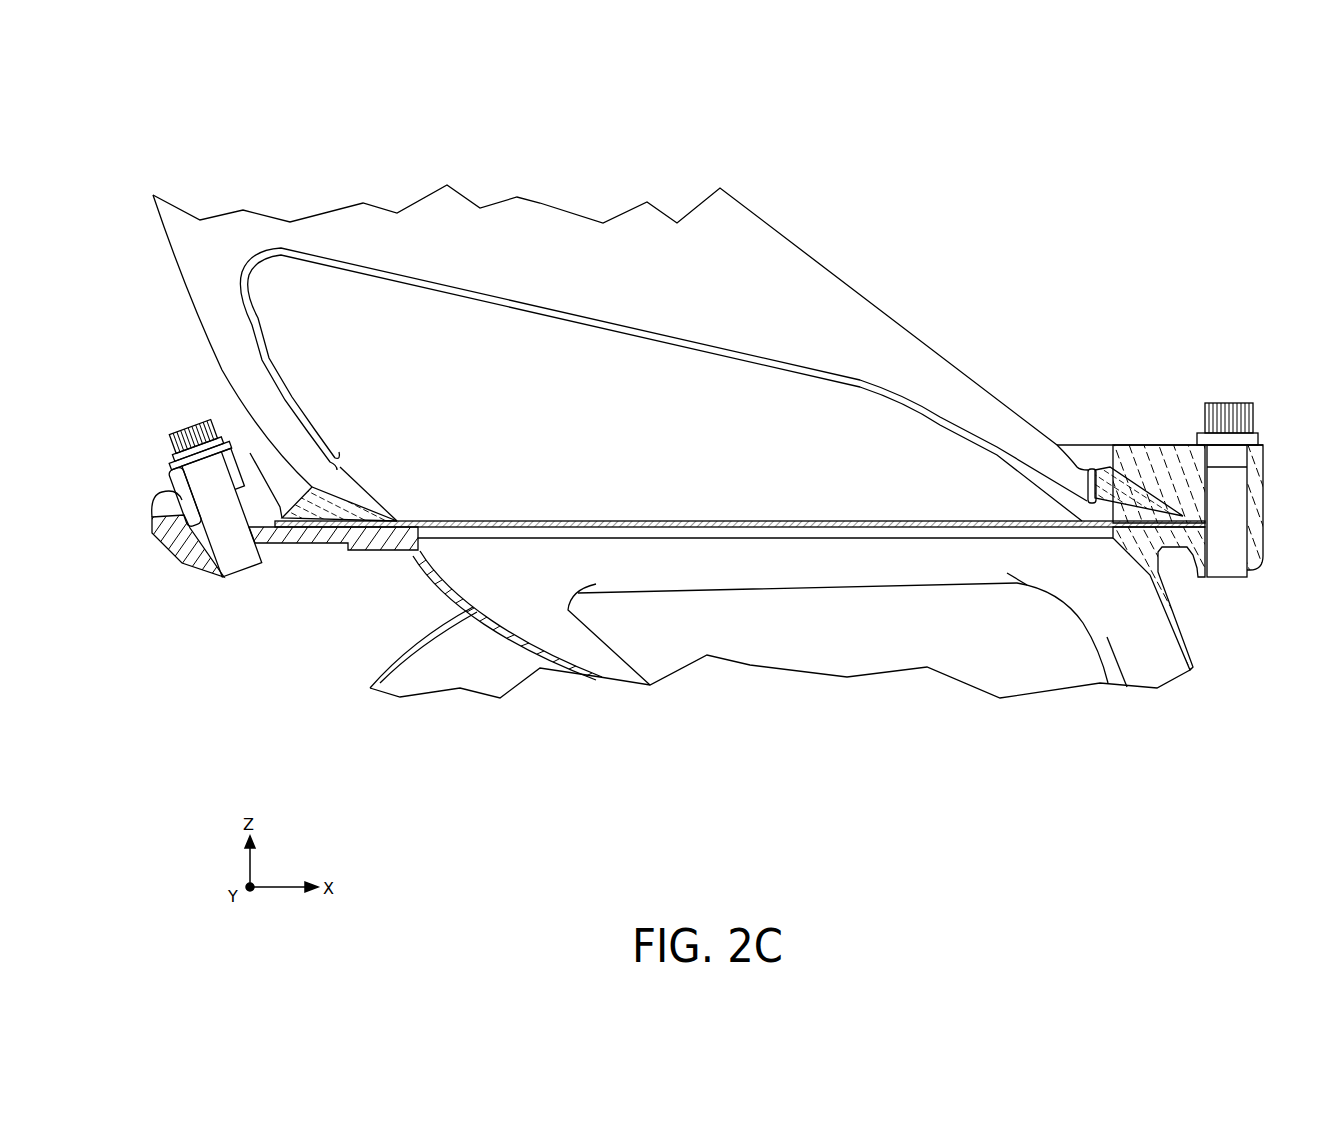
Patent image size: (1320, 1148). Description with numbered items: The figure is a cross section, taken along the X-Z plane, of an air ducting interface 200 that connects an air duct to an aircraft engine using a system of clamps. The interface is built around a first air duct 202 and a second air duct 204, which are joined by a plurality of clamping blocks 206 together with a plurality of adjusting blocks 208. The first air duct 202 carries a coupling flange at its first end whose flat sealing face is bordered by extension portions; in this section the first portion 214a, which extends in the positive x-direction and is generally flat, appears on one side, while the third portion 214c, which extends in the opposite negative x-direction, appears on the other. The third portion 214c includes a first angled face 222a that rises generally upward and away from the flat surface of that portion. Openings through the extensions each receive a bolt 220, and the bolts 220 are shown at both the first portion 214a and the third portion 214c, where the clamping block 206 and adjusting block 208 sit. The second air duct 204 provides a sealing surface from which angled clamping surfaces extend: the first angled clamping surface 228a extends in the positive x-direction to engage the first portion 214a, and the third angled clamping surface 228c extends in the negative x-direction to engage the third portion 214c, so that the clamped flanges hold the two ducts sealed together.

The air ducting interface 200 is at (249, 130).
The first air duct 202 is at (530, 738).
The second air duct 204 is at (864, 225).
The clamping block 206 is at (1137, 446).
The adjusting block 208 is at (167, 497).
The first portion 214a is at (1162, 549).
The third portion 214c is at (307, 537).
The bolt 220 is at (178, 418).
The first angled face 222a is at (190, 562).
The first angled clamping surface 228a is at (1095, 481).
The third angled clamping surface 228c is at (352, 484).